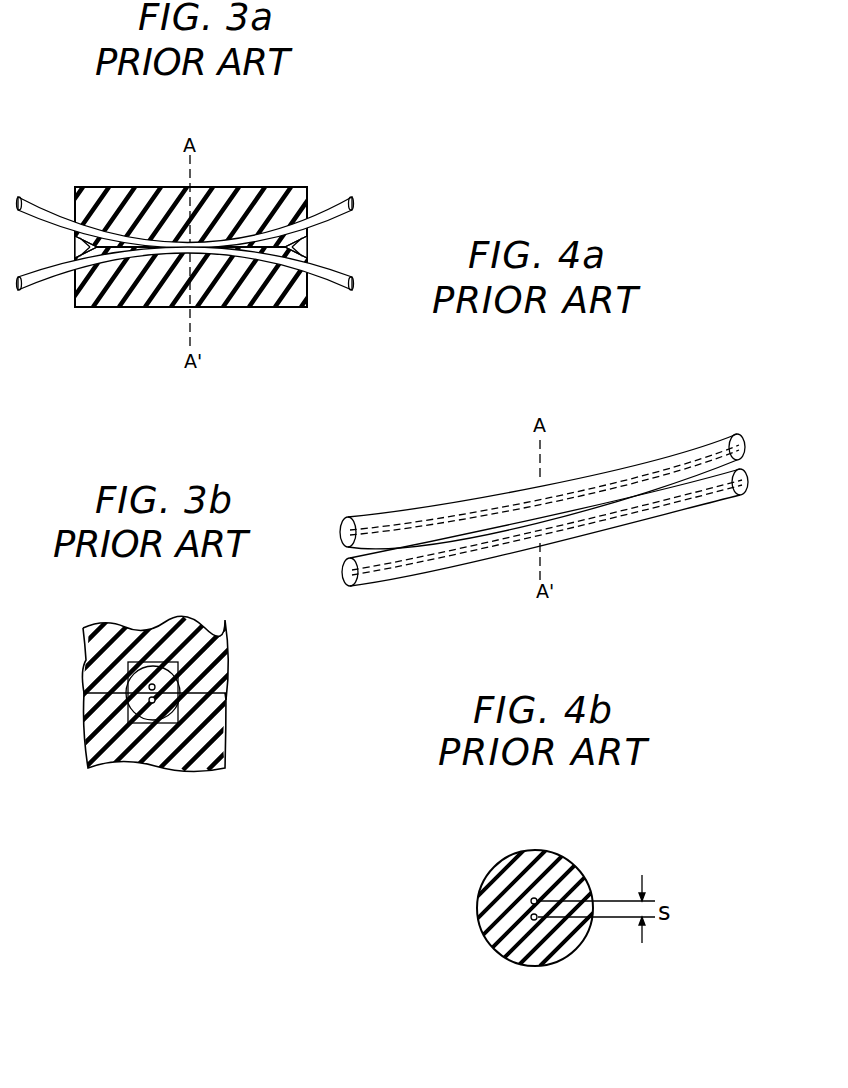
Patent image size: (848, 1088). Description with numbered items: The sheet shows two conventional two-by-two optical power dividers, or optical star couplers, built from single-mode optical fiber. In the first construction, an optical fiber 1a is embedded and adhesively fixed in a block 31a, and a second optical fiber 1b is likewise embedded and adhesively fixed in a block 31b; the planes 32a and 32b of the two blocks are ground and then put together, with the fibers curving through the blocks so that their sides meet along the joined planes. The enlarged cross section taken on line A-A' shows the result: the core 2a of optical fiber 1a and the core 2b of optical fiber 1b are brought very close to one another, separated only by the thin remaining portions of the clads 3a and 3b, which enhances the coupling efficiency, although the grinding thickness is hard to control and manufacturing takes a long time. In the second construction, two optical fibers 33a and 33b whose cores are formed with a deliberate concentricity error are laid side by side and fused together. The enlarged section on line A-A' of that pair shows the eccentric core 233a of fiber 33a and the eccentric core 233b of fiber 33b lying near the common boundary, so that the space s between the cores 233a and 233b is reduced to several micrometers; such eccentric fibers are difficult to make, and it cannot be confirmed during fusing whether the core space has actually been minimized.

In FIG. 3A, the optical fiber 1a is at (38, 205).
In FIG. 3A, the optical fiber 1b is at (40, 291).
In FIG. 3A, the block 31a is at (270, 195).
In FIG. 3B, the block 31a is at (190, 624).
In FIG. 3A, the block 31b is at (250, 300).
In FIG. 3B, the block 31b is at (197, 762).
In FIG. 3A, the plane 32a is at (310, 239).
In FIG. 3A, the plane 32b is at (310, 256).
In FIG. 3B, the core 2a is at (156, 687).
In FIG. 3B, the core 2b is at (156, 700).
In FIG. 3B, the clad 3a is at (160, 670).
In FIG. 3B, the clad 3b is at (165, 714).
In FIG. 4A, the optical fiber 33a is at (378, 525).
In FIG. 4A, the optical fiber 33b is at (378, 572).
In FIG. 4B, the core 233a is at (537, 898).
In FIG. 4B, the core 233b is at (536, 920).